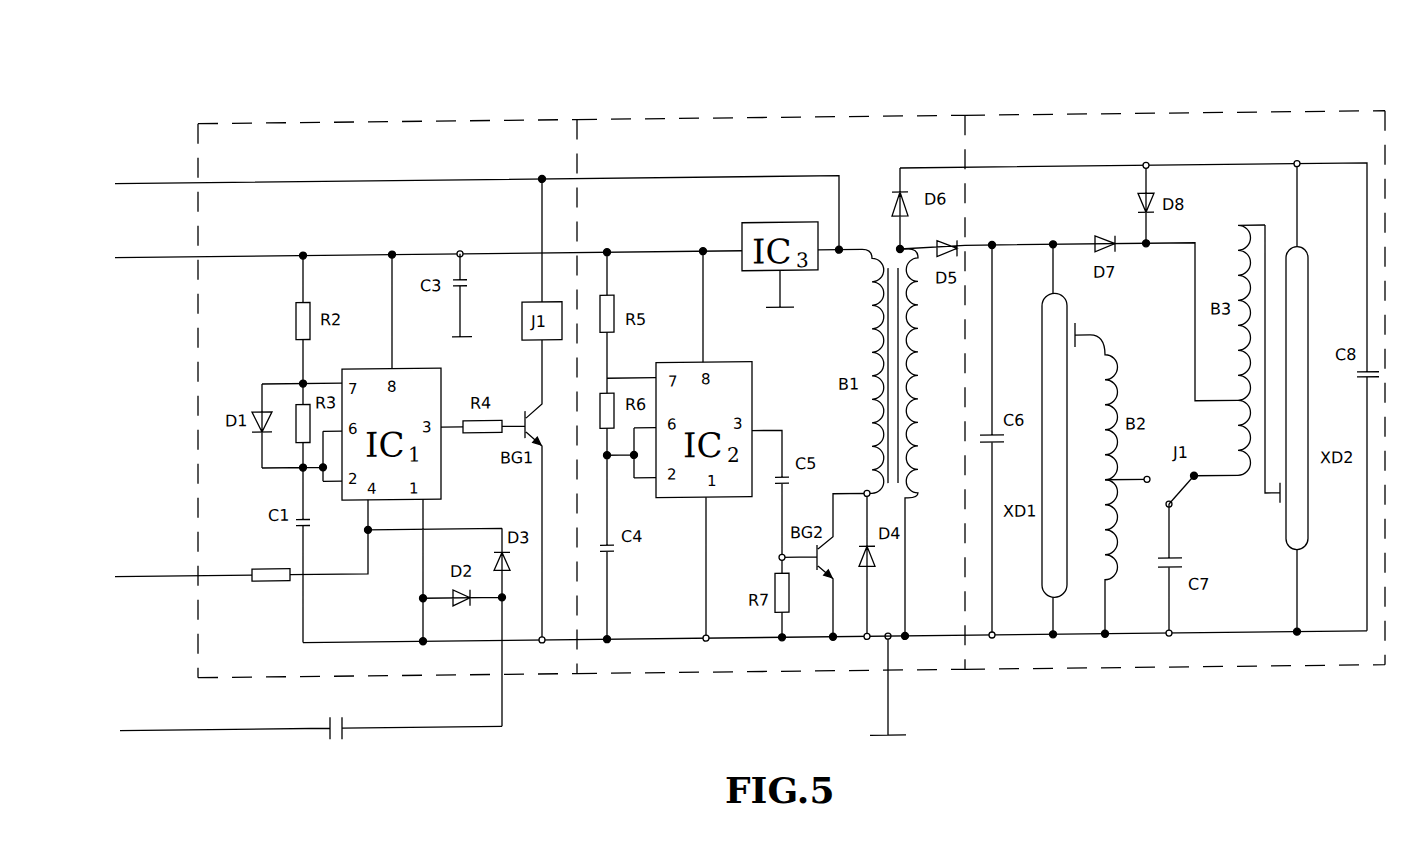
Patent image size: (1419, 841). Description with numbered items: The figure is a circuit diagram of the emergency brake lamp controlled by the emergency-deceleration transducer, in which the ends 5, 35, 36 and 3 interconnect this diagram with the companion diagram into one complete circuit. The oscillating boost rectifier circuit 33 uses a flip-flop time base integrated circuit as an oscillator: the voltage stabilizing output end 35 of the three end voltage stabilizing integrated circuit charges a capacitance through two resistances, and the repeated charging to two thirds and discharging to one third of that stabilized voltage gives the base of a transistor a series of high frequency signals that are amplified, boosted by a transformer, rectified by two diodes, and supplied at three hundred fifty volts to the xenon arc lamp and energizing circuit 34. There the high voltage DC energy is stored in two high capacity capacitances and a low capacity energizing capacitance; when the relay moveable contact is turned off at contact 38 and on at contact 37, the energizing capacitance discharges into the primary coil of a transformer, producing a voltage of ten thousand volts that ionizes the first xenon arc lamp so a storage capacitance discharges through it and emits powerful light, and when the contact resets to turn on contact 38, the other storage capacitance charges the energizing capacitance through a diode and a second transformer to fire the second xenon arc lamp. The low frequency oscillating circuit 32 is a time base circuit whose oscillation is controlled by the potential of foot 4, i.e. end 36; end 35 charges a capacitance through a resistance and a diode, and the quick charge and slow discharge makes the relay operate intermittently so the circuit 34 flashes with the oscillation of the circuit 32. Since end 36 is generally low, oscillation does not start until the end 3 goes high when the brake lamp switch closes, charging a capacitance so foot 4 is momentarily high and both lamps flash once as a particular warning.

The end 3 is at (311, 714).
The foot 4 is at (880, 684).
The end 5 is at (479, 196).
The low frequency oscillating circuit 32 is at (358, 146).
The oscillating boost rectifier circuit 33 is at (725, 143).
The xenon arc lamp and energizing circuit 34 is at (1195, 141).
The end 35 is at (424, 237).
The end 36 is at (240, 556).
The relay moveable contact on position 37 is at (1127, 500).
The relay moveable contact position 38 is at (1189, 498).